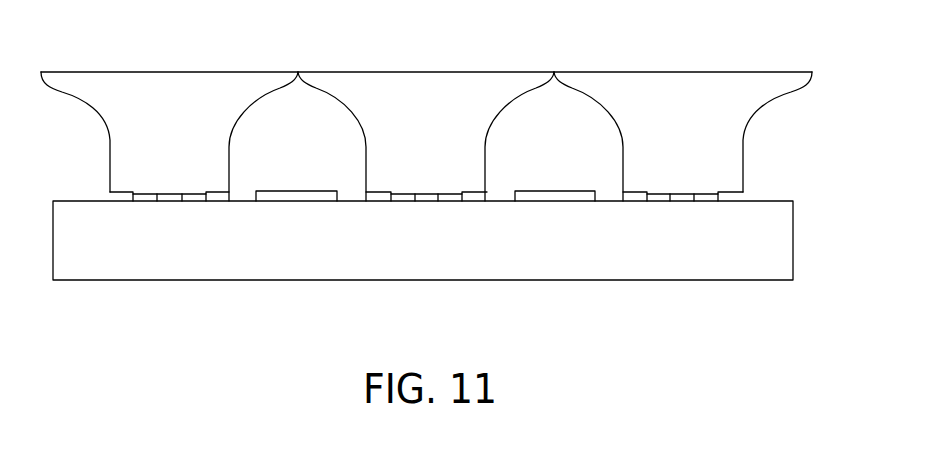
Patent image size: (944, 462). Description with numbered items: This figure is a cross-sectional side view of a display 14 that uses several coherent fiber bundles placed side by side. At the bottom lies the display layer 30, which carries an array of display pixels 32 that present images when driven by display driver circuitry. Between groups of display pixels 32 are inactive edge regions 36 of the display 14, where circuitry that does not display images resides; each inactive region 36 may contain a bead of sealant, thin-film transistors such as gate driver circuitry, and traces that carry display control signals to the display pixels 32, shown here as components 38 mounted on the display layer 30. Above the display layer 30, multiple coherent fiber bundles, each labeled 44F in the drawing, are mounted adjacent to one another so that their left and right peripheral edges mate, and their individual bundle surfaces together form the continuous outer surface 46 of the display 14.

The display 14 is at (828, 62).
The display structures 30 is at (783, 242).
The display pixels 32 is at (140, 201).
The inactive edge region 36 is at (287, 156).
The components 38 is at (298, 191).
The flange portion of mold body 44F is at (188, 87).
The surface 46 is at (490, 72).